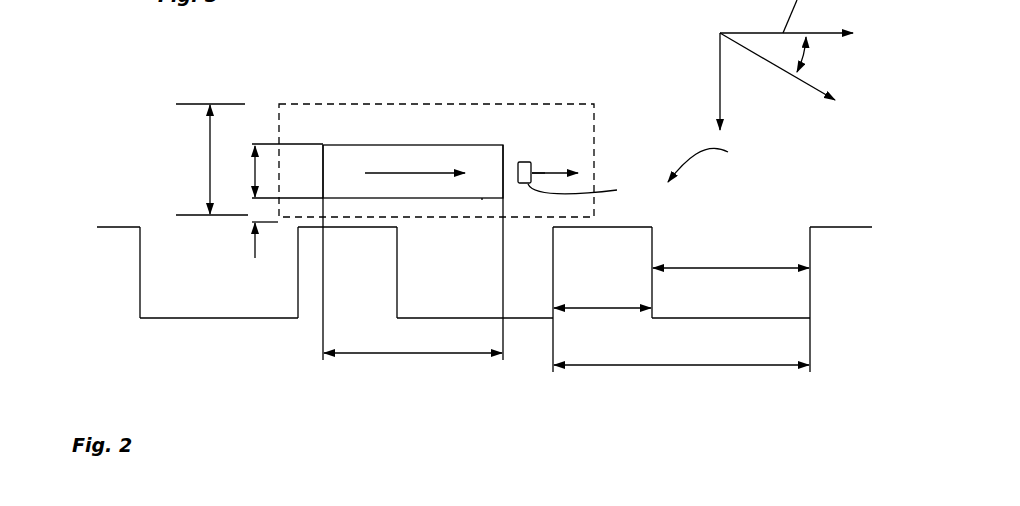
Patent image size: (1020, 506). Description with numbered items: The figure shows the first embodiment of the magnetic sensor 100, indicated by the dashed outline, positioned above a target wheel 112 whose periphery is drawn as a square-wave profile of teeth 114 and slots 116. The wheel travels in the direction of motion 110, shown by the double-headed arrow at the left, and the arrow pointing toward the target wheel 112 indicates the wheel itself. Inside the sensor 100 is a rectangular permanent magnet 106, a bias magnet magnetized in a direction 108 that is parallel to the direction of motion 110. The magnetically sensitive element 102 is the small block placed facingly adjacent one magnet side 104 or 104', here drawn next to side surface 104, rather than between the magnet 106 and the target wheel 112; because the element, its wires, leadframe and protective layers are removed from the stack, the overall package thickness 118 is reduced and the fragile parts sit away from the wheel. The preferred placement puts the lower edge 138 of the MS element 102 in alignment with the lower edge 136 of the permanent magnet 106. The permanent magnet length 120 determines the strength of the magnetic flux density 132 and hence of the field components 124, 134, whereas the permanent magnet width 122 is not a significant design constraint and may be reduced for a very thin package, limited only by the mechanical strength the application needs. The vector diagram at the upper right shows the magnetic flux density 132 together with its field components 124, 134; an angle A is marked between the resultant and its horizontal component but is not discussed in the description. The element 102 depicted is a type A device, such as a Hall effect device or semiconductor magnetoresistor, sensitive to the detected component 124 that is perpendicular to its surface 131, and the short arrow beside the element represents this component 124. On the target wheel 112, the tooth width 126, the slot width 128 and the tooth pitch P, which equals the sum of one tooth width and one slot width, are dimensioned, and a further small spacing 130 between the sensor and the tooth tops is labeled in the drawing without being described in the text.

The magnetic sensor 100 is at (278, 101).
The magnetically sensitive element 102 is at (530, 165).
The magnet side 104 is at (511, 131).
The magnet side 104' is at (337, 124).
The permanent magnet 106 is at (385, 150).
The direction of magnetization 108 is at (425, 172).
The direction of motion 110 is at (110, 273).
The target wheel 112 is at (717, 163).
The teeth 114 is at (343, 226).
The slots 116 is at (235, 317).
The overall package thickness 118 is at (210, 172).
The permanent magnet length 120 is at (390, 355).
The permanent magnet width 122 is at (252, 171).
The component of magnetic flux density 124 is at (547, 175).
The tooth width 126 is at (615, 310).
The slot width 128 is at (737, 268).
The gap spacing 130 is at (252, 214).
The surface of the MS element 131 is at (547, 172).
The magnetic flux density 132 is at (810, 90).
The magnetic field component 134 is at (718, 50).
The lower edge of permanent magnet 136 is at (482, 200).
The lower edge of the MS element 138 is at (592, 191).
The tooth pitch P is at (693, 365).
The skew angle A is at (800, 56).